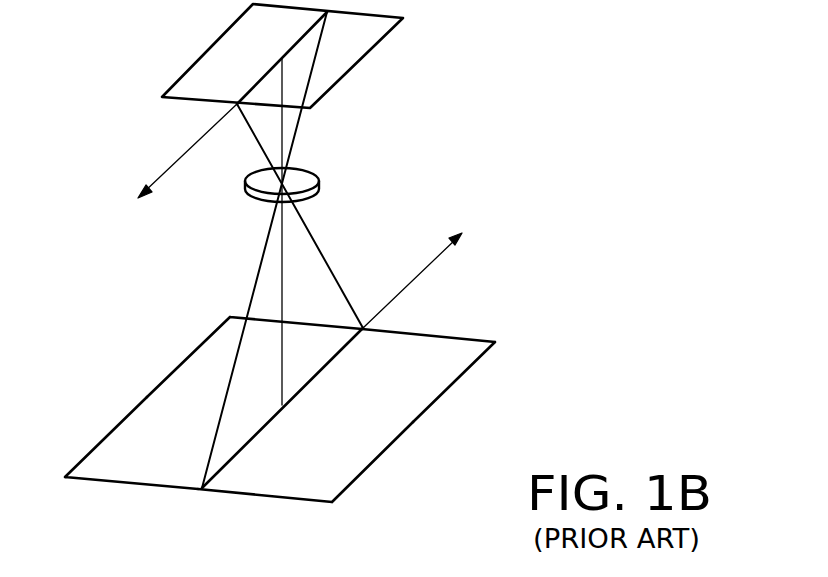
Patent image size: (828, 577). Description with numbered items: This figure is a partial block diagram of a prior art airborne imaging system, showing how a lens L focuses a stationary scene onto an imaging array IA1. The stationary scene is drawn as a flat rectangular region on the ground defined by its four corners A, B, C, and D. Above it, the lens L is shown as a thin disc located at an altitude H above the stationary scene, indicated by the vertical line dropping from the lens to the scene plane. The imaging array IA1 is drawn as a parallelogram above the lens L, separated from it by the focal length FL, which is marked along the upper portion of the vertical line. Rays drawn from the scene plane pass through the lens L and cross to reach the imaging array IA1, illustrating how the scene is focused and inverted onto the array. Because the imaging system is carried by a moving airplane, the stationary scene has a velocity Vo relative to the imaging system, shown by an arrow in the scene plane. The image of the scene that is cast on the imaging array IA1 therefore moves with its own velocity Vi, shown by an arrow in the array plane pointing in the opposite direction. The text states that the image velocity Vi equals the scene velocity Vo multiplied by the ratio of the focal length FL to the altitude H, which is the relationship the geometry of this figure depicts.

The imaging array IA1 is at (375, 45).
The lens L is at (319, 187).
The focal length FL is at (268, 120).
The altitude H is at (292, 294).
The velocity of the image Vi is at (169, 166).
The velocity of the stationary scene Vo is at (423, 265).
The corner of stationary scene A is at (116, 451).
The corner of stationary scene B is at (254, 345).
The corner of stationary scene C is at (445, 375).
The corner of stationary scene D is at (305, 477).